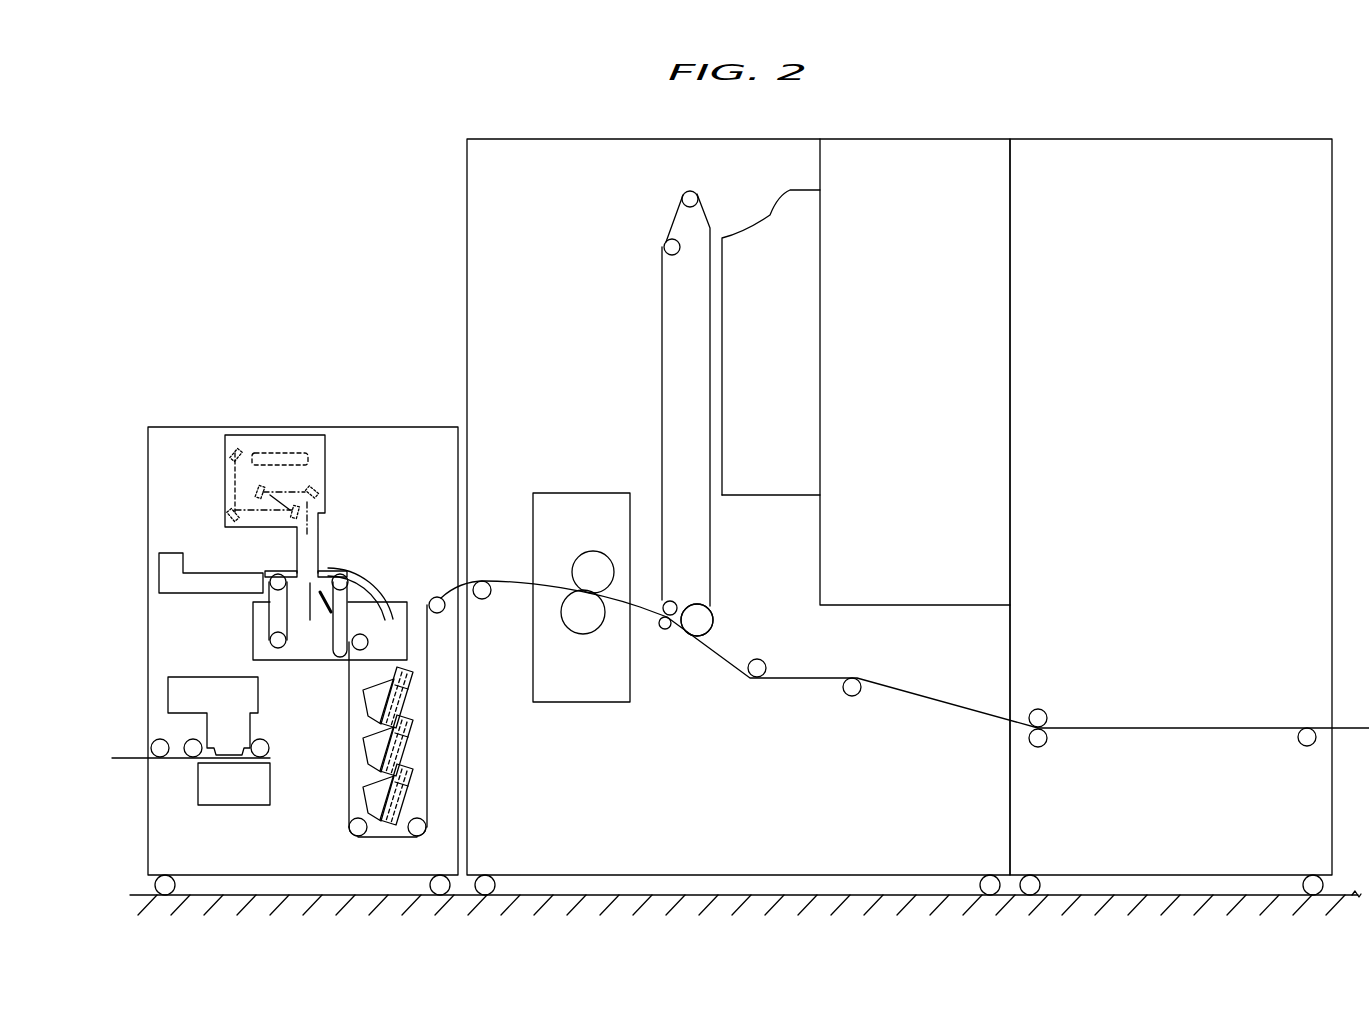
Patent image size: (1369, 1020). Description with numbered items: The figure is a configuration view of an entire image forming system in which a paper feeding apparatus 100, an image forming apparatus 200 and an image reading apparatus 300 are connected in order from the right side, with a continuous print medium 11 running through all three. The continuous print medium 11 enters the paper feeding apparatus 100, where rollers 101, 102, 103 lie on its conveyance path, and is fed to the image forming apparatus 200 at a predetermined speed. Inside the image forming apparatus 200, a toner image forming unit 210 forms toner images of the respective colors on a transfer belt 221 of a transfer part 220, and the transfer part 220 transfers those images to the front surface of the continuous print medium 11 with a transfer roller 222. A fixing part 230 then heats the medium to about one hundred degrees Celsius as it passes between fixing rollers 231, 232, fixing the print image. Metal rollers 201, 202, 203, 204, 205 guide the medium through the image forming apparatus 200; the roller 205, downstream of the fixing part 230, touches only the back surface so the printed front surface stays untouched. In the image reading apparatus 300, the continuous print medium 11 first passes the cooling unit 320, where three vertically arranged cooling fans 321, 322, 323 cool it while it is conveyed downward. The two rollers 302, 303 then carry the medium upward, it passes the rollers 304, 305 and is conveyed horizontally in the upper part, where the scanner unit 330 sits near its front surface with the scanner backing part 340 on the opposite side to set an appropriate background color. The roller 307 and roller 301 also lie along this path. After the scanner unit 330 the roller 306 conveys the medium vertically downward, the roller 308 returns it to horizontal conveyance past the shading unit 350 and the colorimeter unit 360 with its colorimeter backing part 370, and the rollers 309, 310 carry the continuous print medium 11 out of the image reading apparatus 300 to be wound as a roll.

The continuous print medium 11 is at (453, 593).
The paper feeding apparatus 100 is at (1163, 137).
The roller 101 is at (1305, 733).
The roller 102 is at (1040, 740).
The roller 103 is at (1038, 710).
The image forming apparatus 200 is at (897, 137).
The roller 201 is at (852, 696).
The roller 202 is at (758, 660).
The roller 203 is at (670, 600).
The roller 204 is at (663, 630).
The roller 205 is at (487, 597).
The toner image forming unit 210 is at (767, 212).
The transfer part 220 is at (683, 538).
The transfer belt 221 is at (660, 383).
The transfer roller 222 is at (697, 622).
The fixing part 230 is at (558, 492).
The fixing roller 231 is at (595, 551).
The fixing roller 232 is at (580, 635).
The image reading apparatus 300 is at (356, 425).
The roller 301 is at (427, 593).
The roller 302 is at (417, 836).
The roller 303 is at (358, 836).
The roller 304 is at (360, 634).
The roller 305 is at (337, 570).
The roller 306 is at (265, 572).
The roller 307 is at (270, 640).
The roller 308 is at (270, 750).
The roller 309 is at (195, 740).
The roller 310 is at (155, 733).
The cooling unit 320 is at (462, 734).
The cooling fan 321 is at (367, 710).
The cooling fan 322 is at (367, 752).
The cooling fan 323 is at (367, 792).
The scanner unit 330 is at (248, 435).
The scanner backing part 340 is at (300, 614).
The shading unit 350 is at (159, 562).
The colorimeter unit 360 is at (187, 692).
The colorimeter backing part 370 is at (210, 807).